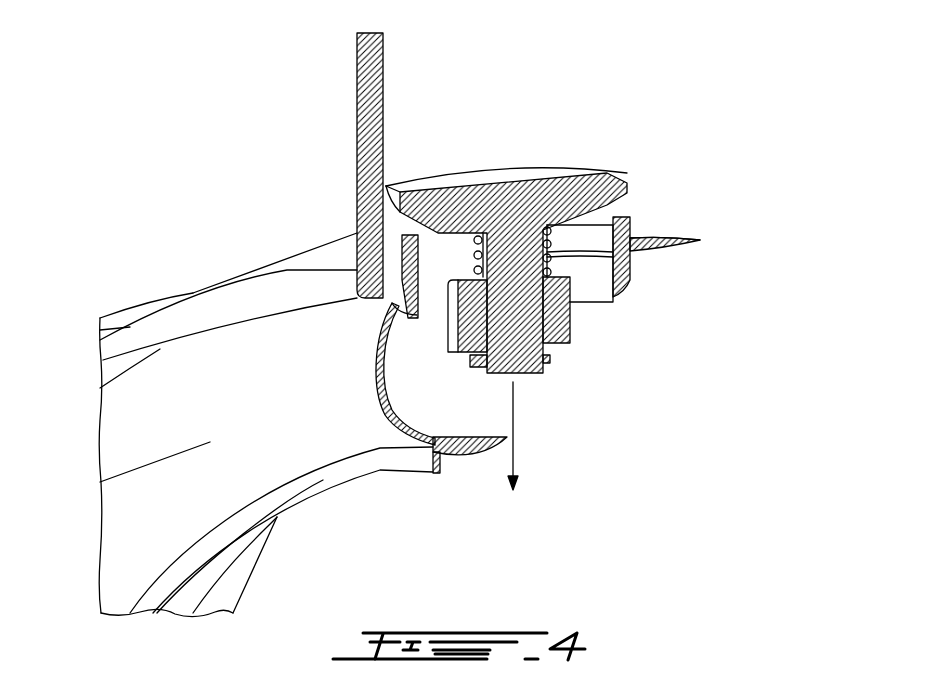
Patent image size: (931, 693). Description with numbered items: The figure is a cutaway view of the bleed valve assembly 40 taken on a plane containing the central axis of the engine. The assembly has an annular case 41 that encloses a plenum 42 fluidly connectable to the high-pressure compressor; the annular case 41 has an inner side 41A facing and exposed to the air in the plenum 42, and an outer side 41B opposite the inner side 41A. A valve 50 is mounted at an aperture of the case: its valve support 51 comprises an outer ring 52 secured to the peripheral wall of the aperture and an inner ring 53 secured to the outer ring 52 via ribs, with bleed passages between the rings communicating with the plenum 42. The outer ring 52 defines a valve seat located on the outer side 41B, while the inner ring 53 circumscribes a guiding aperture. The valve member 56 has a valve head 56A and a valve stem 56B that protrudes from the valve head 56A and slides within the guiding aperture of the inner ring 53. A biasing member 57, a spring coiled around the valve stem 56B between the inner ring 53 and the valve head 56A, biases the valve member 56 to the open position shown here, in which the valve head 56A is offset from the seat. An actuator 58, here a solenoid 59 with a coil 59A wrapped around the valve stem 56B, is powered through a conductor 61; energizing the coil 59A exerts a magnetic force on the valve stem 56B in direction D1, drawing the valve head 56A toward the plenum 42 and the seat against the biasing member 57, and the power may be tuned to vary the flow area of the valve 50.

The bleed valve assembly 40 is at (805, 144).
The annular case 41 is at (100, 482).
The inner side 41A is at (672, 252).
The outer side 41B is at (673, 238).
The plenum 42 is at (403, 386).
The valve 50 is at (489, 137).
The valve support 51 is at (640, 200).
The outer ring 52 is at (459, 273).
The inner ring 53 is at (570, 326).
The valve member 56 is at (537, 166).
The valve head 56A is at (445, 212).
The valve stem 56B is at (508, 338).
The biasing member 57 is at (556, 238).
The actuator 58 is at (362, 177).
The solenoid 59 is at (446, 330).
The coil 59A is at (457, 452).
The conductor 61 is at (283, 274).
The direction D1 is at (517, 440).